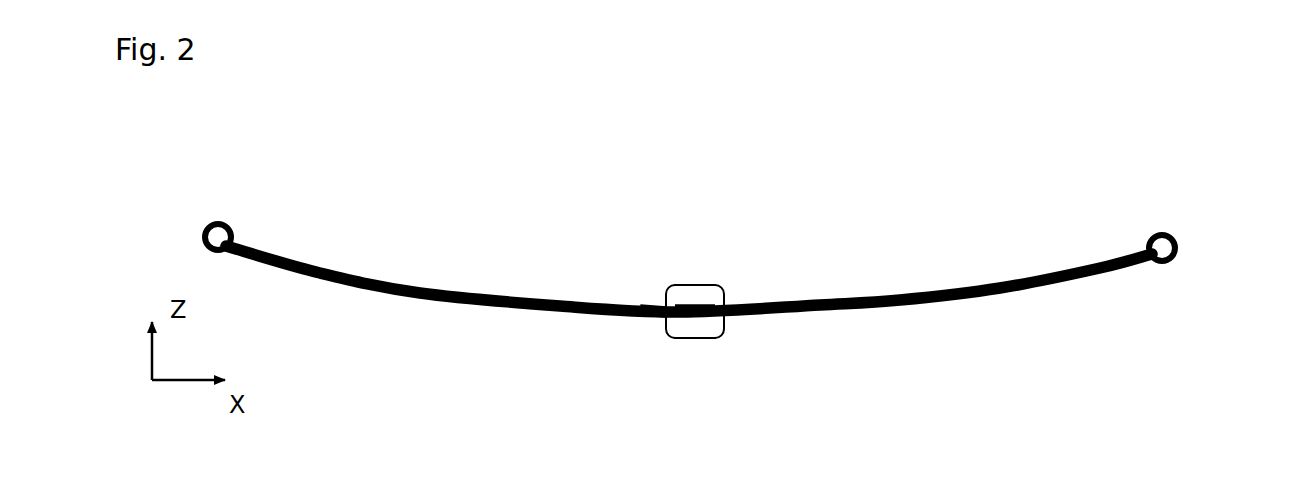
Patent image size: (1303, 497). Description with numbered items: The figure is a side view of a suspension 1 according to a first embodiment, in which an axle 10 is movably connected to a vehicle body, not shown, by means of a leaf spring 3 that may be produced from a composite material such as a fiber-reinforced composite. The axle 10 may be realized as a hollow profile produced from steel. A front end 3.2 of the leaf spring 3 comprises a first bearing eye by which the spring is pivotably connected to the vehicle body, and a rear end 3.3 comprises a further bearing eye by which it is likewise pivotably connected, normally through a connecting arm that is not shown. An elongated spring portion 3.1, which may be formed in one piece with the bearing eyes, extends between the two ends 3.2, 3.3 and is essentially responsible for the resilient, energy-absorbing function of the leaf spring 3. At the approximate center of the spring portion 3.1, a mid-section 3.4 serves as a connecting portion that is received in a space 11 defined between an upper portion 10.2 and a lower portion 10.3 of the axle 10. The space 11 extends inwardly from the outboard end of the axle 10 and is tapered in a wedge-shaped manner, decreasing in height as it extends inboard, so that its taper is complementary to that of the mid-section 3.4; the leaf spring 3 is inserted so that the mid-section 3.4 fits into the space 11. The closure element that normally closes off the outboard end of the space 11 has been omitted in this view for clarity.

The suspension 1 is at (1190, 111).
The leaf spring 3 is at (689, 329).
The spring portion 3.1 is at (850, 312).
The front end 3.2 is at (260, 222).
The rear end 3.3 is at (1136, 284).
The mid-section 3.4 is at (655, 318).
The axle 10 is at (693, 340).
The upper portion 10.2 is at (716, 272).
The lower portion 10.3 is at (661, 345).
The space 11 is at (679, 295).